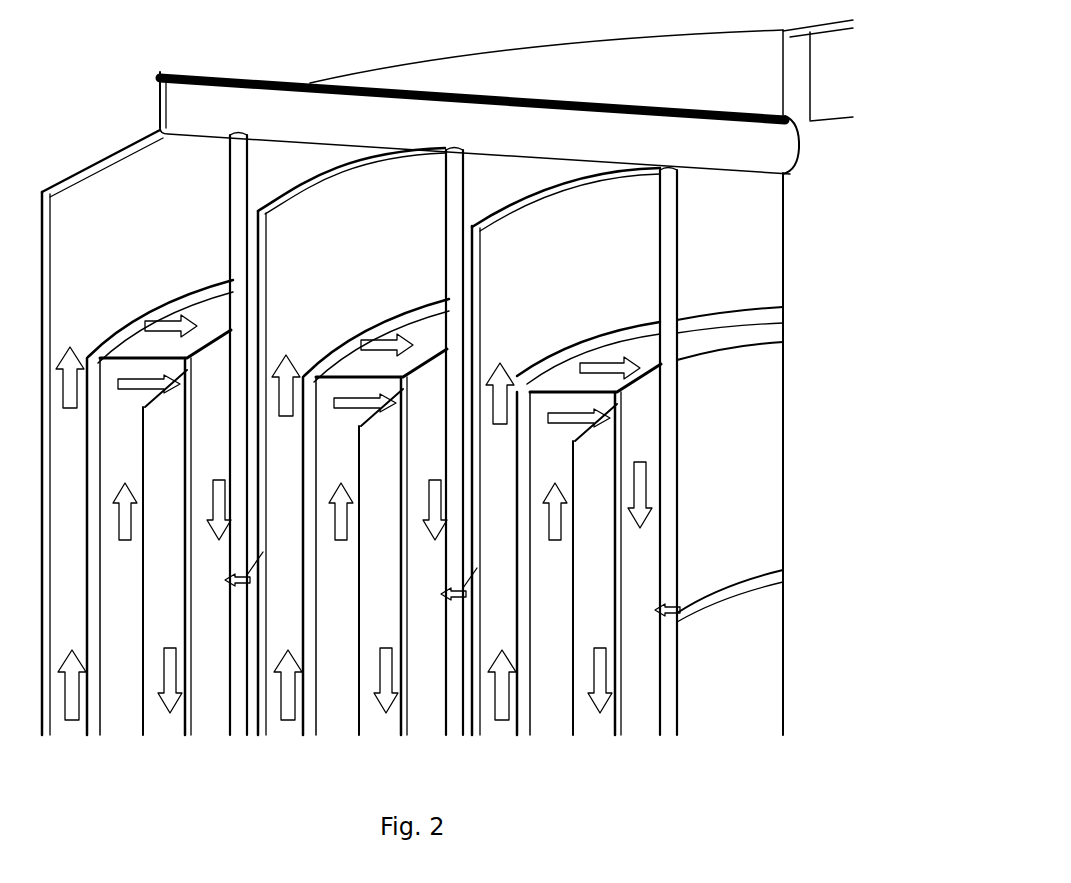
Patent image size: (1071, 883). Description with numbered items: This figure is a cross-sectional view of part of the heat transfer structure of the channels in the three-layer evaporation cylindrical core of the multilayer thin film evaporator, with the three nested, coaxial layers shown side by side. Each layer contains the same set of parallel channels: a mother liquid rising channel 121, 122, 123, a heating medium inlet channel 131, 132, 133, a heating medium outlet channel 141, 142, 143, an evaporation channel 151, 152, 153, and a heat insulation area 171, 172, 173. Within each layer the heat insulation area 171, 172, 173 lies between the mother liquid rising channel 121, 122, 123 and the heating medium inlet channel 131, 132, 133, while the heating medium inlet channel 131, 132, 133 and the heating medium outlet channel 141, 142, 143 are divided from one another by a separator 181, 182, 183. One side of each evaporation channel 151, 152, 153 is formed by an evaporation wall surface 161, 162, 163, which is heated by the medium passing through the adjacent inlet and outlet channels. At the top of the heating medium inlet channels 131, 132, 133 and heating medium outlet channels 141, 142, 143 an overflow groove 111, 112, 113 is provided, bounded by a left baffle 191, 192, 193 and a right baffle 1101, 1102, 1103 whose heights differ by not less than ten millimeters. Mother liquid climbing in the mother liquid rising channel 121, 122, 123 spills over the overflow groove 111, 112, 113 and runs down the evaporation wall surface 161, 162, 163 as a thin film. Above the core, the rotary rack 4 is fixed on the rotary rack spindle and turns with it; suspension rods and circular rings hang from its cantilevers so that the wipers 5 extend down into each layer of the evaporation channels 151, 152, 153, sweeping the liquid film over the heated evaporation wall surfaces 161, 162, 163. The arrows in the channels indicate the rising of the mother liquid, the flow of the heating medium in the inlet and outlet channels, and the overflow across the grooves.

The rotary rack 4 is at (173, 72).
The wipers 5 is at (683, 600).
The overflow groove 111 is at (159, 532).
The overflow groove 112 is at (375, 542).
The overflow groove 113 is at (589, 549).
The mother liquid rising channel 121 is at (67, 463).
The mother liquid rising channel 122 is at (285, 473).
The mother liquid rising channel 123 is at (498, 480).
The heating medium inlet channel 131 is at (130, 561).
The heating medium inlet channel 132 is at (341, 561).
The heating medium inlet channel 133 is at (562, 561).
The heating medium outlet channel 141 is at (170, 666).
The heating medium outlet channel 142 is at (380, 666).
The heating medium outlet channel 143 is at (601, 666).
The evaporation channel 151 is at (231, 434).
The evaporation channel 152 is at (446, 442).
The evaporation channel 153 is at (673, 452).
The evaporation wall surface 161 is at (203, 587).
The evaporation wall surface 162 is at (423, 575).
The evaporation wall surface 163 is at (630, 580).
The heat insulation area 171 is at (93, 407).
The heat insulation area 172 is at (315, 423).
The heat insulation area 173 is at (527, 420).
The separator 181 is at (143, 505).
The separator 182 is at (357, 520).
The separator 183 is at (565, 500).
The left baffle 191 is at (107, 328).
The left baffle 192 is at (323, 343).
The left baffle 193 is at (540, 363).
The right baffle 1101 is at (218, 333).
The right baffle 1102 is at (433, 347).
The right baffle 1103 is at (648, 370).